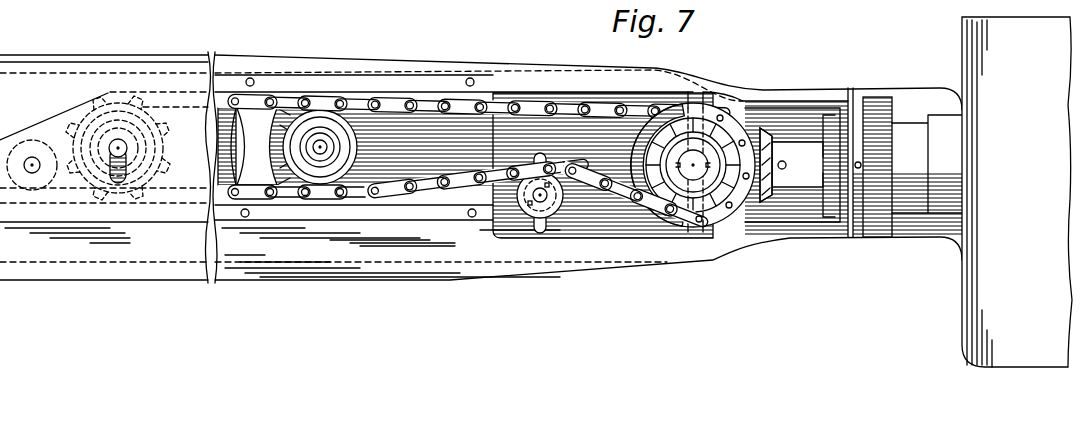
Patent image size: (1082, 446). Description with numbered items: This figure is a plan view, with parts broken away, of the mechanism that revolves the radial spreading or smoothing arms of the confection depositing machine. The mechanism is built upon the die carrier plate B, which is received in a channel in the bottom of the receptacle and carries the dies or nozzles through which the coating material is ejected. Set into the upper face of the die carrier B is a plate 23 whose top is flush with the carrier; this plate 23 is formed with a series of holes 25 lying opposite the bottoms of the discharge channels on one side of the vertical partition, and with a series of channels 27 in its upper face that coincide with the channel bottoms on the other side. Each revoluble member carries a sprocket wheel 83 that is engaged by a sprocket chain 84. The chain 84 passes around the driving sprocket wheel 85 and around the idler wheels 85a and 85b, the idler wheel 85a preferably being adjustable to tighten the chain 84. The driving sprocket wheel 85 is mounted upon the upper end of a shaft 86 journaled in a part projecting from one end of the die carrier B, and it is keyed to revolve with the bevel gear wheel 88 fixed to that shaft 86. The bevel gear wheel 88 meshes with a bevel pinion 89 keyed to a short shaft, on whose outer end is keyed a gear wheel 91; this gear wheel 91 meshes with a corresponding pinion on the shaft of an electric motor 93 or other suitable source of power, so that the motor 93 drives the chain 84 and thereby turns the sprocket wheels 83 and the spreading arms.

The plate 23 is at (104, 147).
The holes 25 is at (118, 145).
The channels 27 is at (122, 177).
The idler wheel 85b is at (40, 187).
The sprocket chain 84 is at (380, 98).
The sprocket wheel 83 is at (372, 205).
The die carrier plate B is at (420, 285).
The idler wheel 85a is at (532, 212).
The driving sprocket wheel 85 is at (637, 208).
The shaft 86 is at (690, 173).
The bevel gear wheel 88 is at (710, 230).
The bevel pinion 89 is at (764, 195).
The gear wheel 91 is at (877, 227).
The electric motor 93 is at (1017, 192).